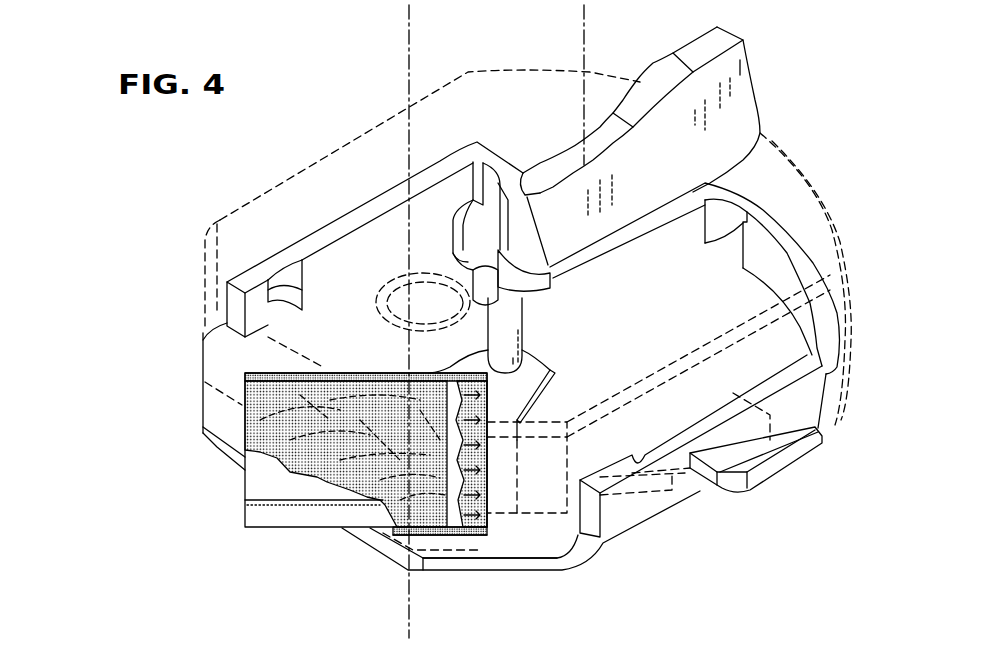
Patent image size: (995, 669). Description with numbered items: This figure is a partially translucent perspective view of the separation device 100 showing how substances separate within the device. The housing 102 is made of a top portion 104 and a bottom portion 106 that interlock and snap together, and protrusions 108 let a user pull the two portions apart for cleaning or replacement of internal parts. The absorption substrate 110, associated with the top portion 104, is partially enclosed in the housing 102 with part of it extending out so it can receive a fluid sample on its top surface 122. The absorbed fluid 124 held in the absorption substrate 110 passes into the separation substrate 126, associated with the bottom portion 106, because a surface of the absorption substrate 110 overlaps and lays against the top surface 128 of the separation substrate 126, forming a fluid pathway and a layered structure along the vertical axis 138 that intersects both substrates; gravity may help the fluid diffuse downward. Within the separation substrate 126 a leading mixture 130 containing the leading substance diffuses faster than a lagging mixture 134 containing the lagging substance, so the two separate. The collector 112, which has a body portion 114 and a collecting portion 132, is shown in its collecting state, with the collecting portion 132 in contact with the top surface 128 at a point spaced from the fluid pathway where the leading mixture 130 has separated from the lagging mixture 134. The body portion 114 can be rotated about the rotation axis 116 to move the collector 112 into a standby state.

The separation device 100 is at (163, 168).
The housing 102 is at (194, 300).
The top portion 104 is at (323, 158).
The bottom portion 106 is at (510, 560).
The protrusions 108 is at (694, 484).
The absorption substrate 110 is at (247, 508).
The collector 112 is at (743, 81).
The body portion 114 is at (730, 107).
The rotation axis 116 is at (584, 13).
The top surface 122 is at (267, 486).
The absorbed fluid 124 is at (253, 403).
The separation substrate 126 is at (553, 570).
The top surface 128 is at (517, 383).
The leading mixture 130 is at (475, 530).
The collecting portion 132 is at (521, 333).
The lagging mixture 134 is at (450, 373).
The vertical axis 138 is at (409, 43).